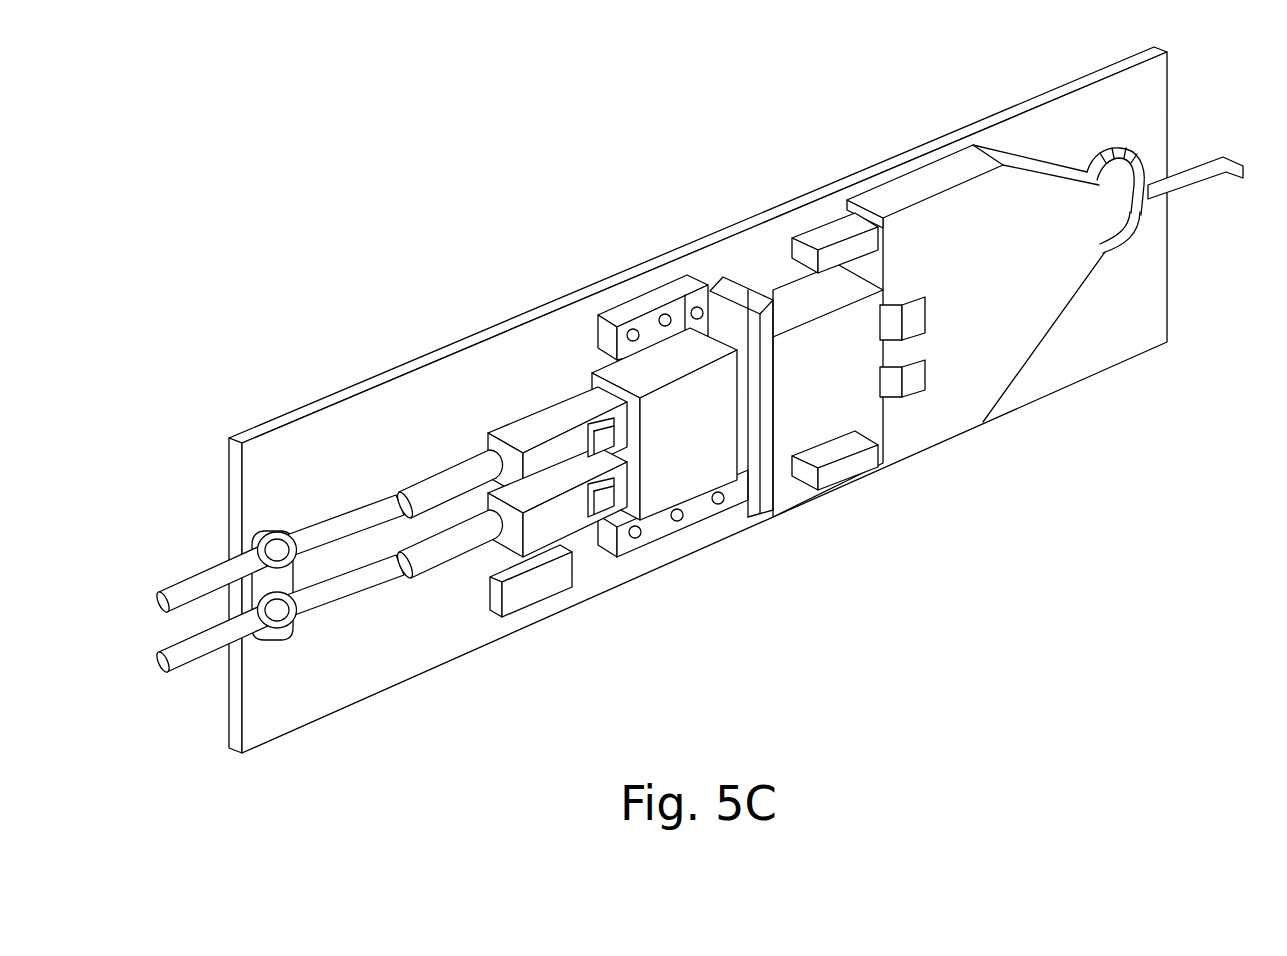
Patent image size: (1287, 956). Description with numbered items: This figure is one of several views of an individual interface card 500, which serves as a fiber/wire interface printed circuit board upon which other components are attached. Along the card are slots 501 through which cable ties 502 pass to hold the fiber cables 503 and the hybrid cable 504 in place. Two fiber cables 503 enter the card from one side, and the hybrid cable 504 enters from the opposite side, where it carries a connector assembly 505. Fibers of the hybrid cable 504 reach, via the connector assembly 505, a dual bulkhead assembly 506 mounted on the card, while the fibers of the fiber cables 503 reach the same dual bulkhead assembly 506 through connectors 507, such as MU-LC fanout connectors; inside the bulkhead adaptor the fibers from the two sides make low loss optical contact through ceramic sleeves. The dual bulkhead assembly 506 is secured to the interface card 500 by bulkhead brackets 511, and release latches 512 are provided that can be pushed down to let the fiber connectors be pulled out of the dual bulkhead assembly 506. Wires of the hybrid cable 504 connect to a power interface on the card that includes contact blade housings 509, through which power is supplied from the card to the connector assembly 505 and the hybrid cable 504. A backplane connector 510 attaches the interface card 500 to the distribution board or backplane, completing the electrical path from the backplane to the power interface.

The interface card 500 is at (547, 737).
The slots 501 is at (288, 577).
The cable ties 502 is at (283, 534).
The fiber cables 503 is at (356, 590).
The hybrid cable 504 is at (1185, 185).
The connector assembly 505 is at (903, 185).
The dual bulkhead assembly 506 is at (762, 516).
The connectors 507 is at (528, 425).
The contact blade housings 509 is at (817, 232).
The backplane connector 510 is at (549, 594).
The bulkhead brackets 511 is at (654, 300).
The release latches 512 is at (590, 441).